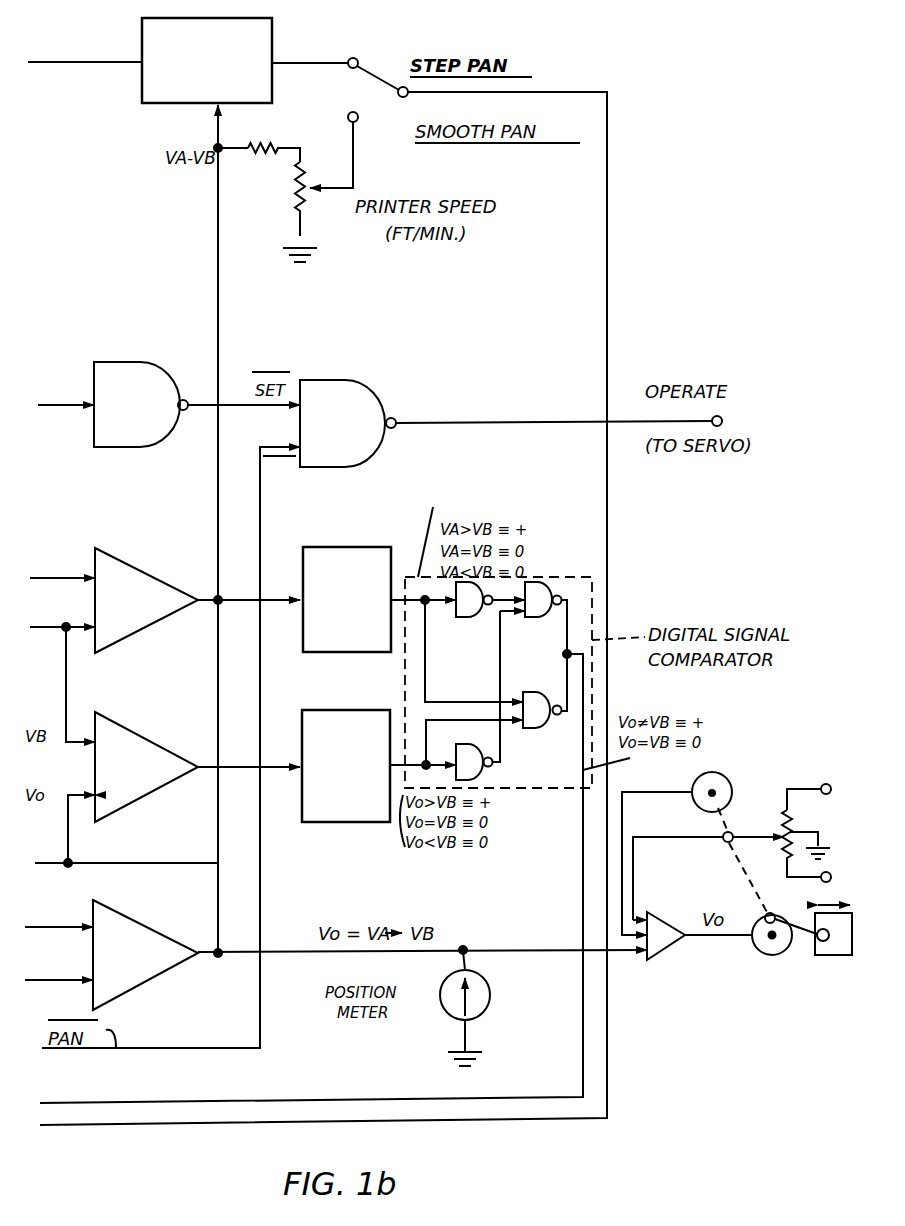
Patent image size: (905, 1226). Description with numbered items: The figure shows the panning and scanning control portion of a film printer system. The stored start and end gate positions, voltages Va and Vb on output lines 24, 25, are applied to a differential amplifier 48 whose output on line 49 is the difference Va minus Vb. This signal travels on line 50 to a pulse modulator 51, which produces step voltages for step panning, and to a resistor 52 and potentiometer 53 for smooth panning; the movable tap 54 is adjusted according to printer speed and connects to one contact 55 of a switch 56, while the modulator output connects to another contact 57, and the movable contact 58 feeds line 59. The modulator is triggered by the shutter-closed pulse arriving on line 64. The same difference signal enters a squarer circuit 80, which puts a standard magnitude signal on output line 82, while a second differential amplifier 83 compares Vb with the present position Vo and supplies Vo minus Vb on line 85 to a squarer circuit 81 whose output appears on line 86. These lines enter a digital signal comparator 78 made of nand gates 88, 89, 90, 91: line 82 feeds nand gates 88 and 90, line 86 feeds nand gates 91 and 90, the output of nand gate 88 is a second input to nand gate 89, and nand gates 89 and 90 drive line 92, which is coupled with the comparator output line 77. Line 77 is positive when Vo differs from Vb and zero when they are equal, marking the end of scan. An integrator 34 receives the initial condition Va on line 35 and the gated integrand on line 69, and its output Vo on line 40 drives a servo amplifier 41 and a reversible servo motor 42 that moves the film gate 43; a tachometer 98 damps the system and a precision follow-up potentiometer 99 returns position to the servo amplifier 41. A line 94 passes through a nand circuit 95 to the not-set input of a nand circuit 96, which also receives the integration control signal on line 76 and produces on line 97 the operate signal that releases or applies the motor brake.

The line 64 is at (82, 64).
The pulse modulator 51 is at (272, 48).
The contact 57 is at (355, 50).
The switch 56 is at (382, 76).
The movable contact 58 is at (382, 88).
The line 59 is at (586, 90).
The resistor 52 is at (275, 146).
The contact 55 is at (359, 116).
The movable tap 54 is at (336, 188).
The potentiometer 53 is at (296, 196).
The line 50 is at (218, 342).
The line 94 is at (50, 412).
The nand circuit 95 is at (138, 373).
The nand circuit 96 is at (360, 386).
The line 97 is at (492, 421).
The output line 24 is at (34, 577).
The output line 25 is at (34, 627).
The differential amplifier 48 is at (141, 573).
The line 49 is at (196, 598).
The line 76 is at (262, 543).
The squarer circuit 80 is at (372, 548).
The output line 82 is at (400, 578).
The digital signal comparator 78 is at (592, 577).
The nand gate 88 is at (459, 618).
The nand gate 89 is at (528, 618).
The line 92 is at (565, 622).
The nand gate 90 is at (545, 725).
The nand gate 91 is at (490, 776).
The line 77 is at (583, 693).
The differential amplifier 83 is at (177, 742).
The line 85 is at (214, 770).
The squarer circuit 81 is at (343, 823).
The output line 86 is at (384, 770).
The line 40 is at (68, 857).
The line 35 is at (32, 920).
The integrator 34 is at (157, 936).
The line 69 is at (36, 982).
The tachometer 98 is at (728, 780).
The potentiometer 99 is at (795, 831).
The servo amplifier 41 is at (666, 921).
The servo motor 42 is at (754, 948).
The film gate 43 is at (816, 956).